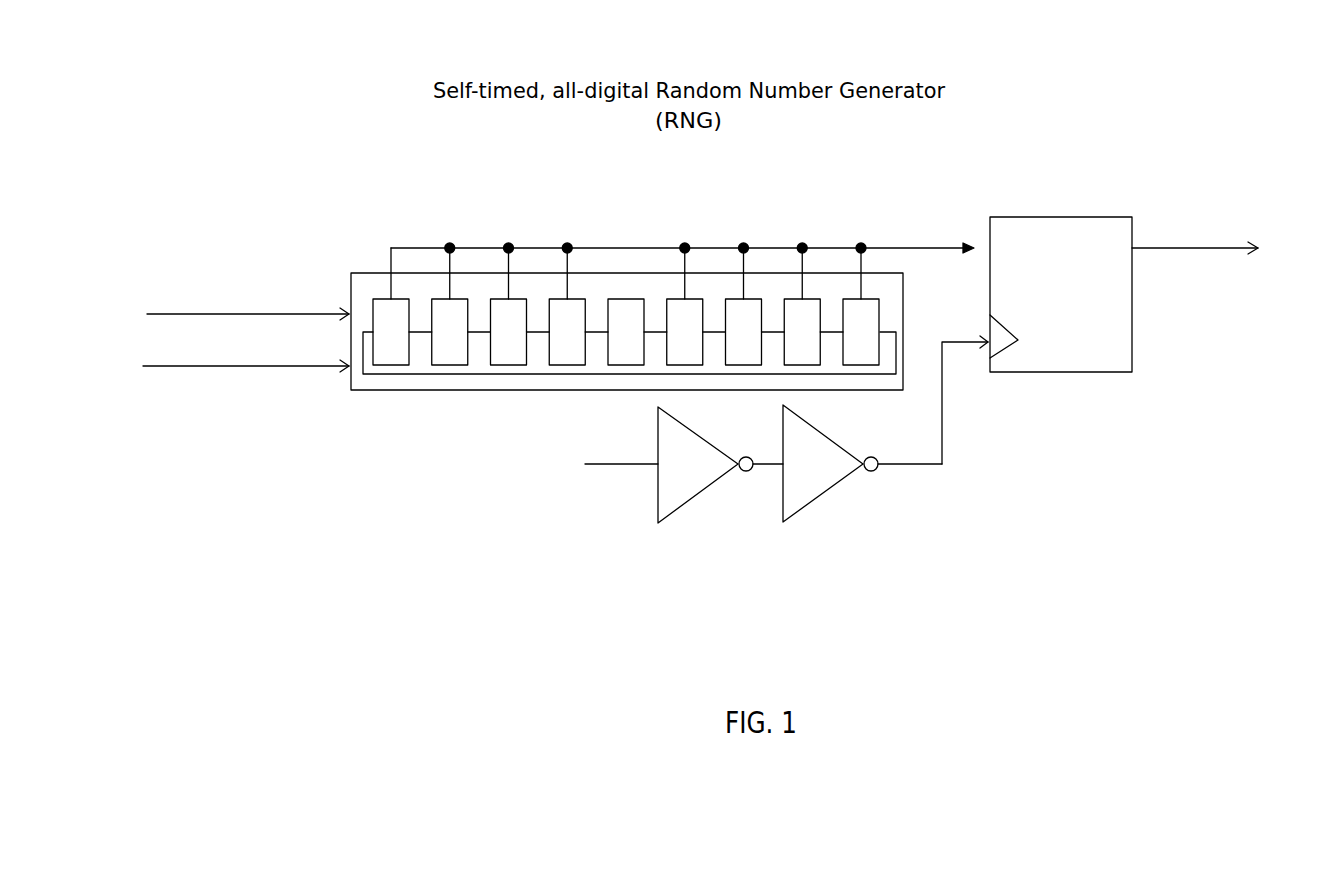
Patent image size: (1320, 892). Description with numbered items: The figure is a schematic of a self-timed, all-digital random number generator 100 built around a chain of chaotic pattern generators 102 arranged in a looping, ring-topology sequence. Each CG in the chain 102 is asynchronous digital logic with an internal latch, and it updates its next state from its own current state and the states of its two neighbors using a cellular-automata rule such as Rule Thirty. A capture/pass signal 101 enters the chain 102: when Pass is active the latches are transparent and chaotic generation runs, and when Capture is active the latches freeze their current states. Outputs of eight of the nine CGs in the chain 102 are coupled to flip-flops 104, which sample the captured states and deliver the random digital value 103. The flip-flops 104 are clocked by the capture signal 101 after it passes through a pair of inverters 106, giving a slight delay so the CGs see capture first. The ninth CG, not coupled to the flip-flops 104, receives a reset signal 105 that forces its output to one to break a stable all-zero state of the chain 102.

The self-timed, all-digital random number generator (RNG) 100 is at (284, 62).
The capture/pass signal 101 is at (177, 262).
The chain of chaotic pattern generators (CGs) 102 is at (371, 273).
The random digital value 103 is at (1202, 197).
The flip-flops (FFs) 104 is at (990, 240).
The reset signal 105 is at (213, 366).
The pair of inverters 106 is at (780, 555).